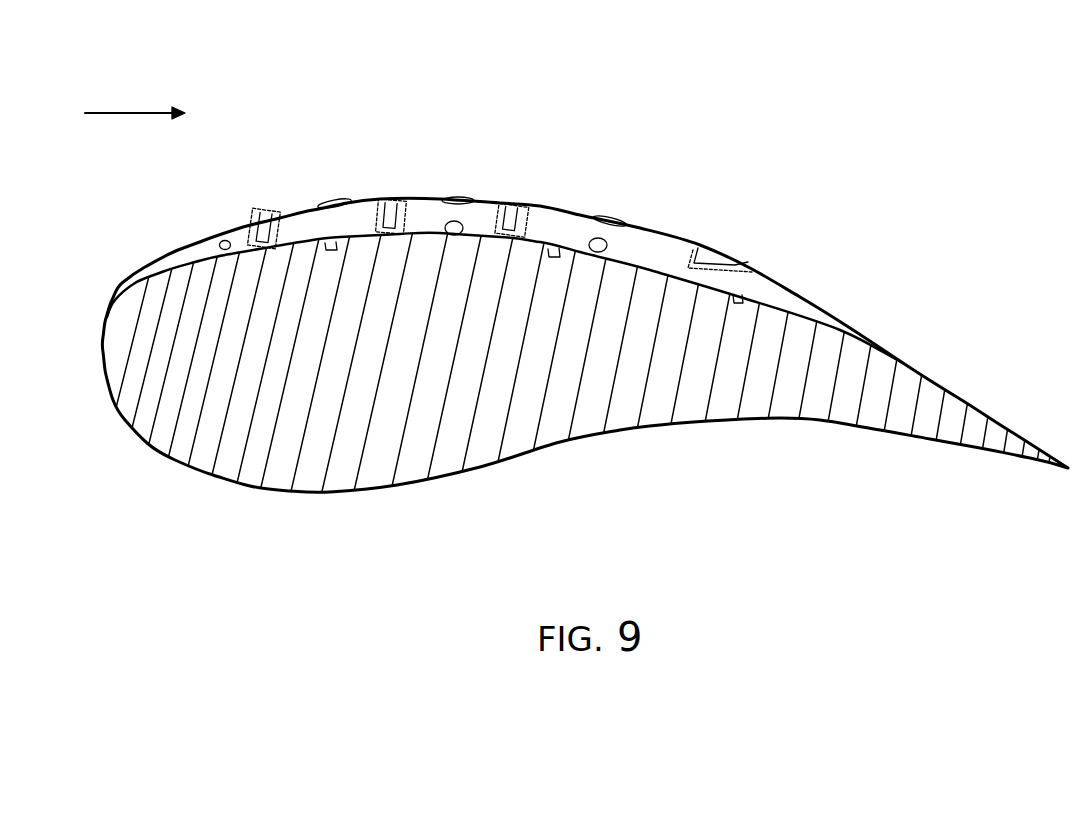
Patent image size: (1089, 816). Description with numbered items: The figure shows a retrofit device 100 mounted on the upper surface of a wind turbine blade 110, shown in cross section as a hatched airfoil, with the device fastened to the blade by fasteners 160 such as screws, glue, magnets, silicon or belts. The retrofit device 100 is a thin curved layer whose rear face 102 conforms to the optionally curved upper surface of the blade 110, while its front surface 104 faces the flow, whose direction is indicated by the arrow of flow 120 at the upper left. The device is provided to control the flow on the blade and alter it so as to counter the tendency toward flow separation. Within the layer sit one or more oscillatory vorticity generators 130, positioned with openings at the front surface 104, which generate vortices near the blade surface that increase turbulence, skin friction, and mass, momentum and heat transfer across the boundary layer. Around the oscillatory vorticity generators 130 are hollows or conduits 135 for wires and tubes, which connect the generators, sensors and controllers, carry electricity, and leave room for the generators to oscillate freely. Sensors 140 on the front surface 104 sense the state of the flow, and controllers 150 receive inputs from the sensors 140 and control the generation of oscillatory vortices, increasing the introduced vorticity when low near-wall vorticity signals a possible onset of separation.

The retrofit device 100 is at (815, 318).
The rear face 102 is at (768, 302).
The front surface 104 is at (868, 340).
The wind turbine blade 110 is at (835, 413).
The flow 120 is at (128, 112).
The oscillatory vorticity generators 130 is at (268, 210).
The conduits 135 is at (403, 202).
The sensors 140 is at (618, 218).
The controllers 150 is at (220, 243).
The fasteners 160 is at (560, 211).